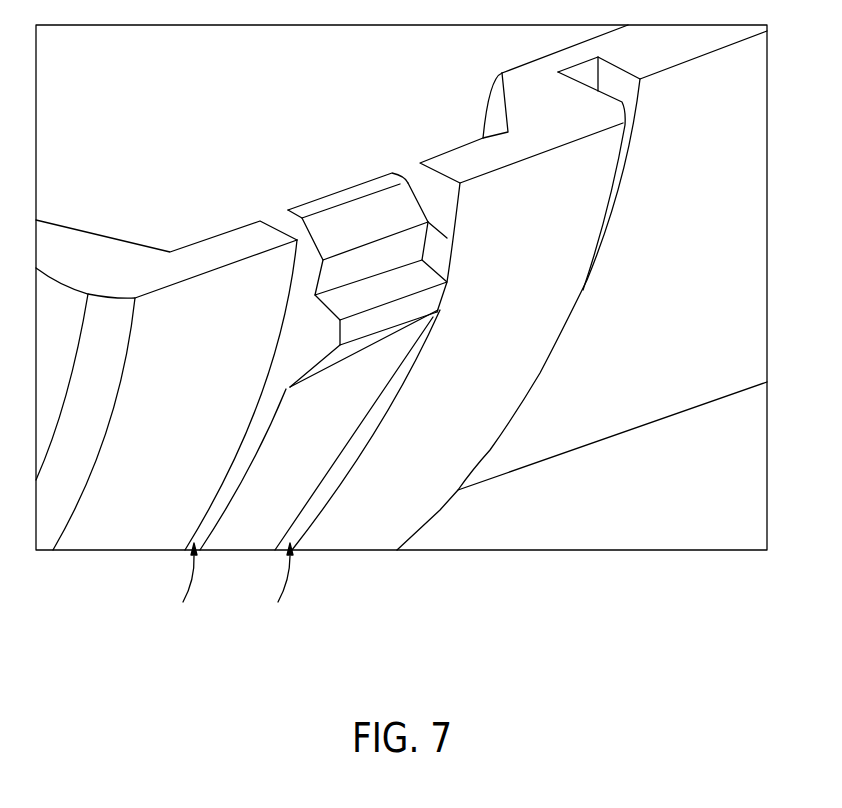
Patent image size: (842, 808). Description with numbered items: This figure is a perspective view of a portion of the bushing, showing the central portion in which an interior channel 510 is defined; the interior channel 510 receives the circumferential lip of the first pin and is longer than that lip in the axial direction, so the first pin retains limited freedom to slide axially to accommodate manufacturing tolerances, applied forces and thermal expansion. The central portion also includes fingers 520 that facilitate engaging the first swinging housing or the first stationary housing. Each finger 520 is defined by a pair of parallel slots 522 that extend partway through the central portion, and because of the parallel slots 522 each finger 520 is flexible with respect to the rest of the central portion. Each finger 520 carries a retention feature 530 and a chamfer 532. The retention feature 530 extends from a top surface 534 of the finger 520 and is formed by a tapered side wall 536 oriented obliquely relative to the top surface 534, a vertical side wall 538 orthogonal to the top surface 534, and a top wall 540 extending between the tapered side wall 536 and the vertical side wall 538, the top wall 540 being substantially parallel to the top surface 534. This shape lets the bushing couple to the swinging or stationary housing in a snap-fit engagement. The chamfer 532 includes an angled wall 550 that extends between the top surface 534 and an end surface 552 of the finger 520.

The interior channel 510 is at (453, 140).
The finger 520 is at (285, 507).
The parallel slots 522 is at (232, 588).
The retention feature 530 is at (387, 340).
The chamfer 532 is at (390, 203).
The top surface 534 is at (318, 468).
The tapered side wall 536 is at (343, 357).
The vertical side wall 538 is at (423, 277).
The top wall 540 is at (430, 298).
The angled wall 550 is at (332, 227).
The end surface 552 is at (363, 190).